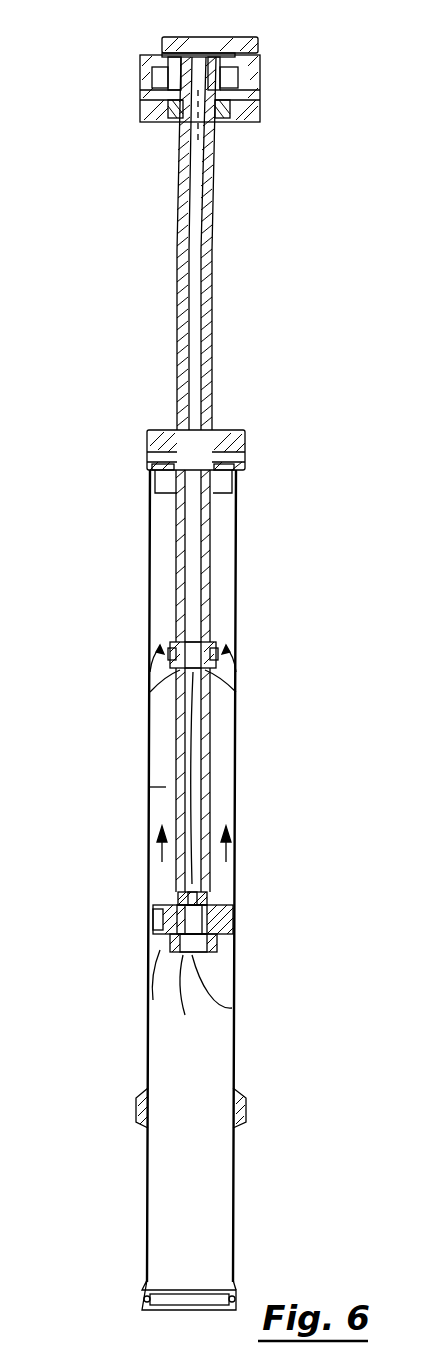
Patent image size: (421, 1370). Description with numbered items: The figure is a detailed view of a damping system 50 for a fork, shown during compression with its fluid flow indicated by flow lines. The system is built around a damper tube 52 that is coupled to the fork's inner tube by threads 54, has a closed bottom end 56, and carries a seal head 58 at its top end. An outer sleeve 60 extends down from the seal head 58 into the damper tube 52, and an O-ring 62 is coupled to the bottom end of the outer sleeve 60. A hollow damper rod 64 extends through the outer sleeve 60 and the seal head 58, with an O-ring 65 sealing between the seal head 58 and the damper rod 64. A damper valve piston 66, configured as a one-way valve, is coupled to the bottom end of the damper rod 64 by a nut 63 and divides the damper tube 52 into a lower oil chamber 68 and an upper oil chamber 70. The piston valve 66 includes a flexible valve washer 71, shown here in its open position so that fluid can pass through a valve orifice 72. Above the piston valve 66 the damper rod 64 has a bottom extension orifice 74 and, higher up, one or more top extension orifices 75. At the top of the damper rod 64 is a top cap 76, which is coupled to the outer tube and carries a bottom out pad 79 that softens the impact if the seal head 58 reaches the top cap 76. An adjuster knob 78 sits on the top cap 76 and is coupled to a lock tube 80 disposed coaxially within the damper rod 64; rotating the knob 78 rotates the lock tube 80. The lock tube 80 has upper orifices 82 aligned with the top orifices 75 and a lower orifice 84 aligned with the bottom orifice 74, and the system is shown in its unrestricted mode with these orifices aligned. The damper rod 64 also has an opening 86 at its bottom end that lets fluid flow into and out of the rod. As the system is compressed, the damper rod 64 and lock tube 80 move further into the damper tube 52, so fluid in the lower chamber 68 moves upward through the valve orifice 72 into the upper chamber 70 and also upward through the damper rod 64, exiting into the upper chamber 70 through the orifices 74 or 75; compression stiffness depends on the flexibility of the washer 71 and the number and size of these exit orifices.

The damping system 50 is at (126, 441).
The damper tube 52 is at (150, 530).
The threads 54 is at (246, 1125).
The closed bottom end 56 is at (145, 1296).
The seal head 58 is at (240, 436).
The outer sleeve 60 is at (207, 566).
The O-ring 62 is at (170, 654).
The nut 63 is at (182, 952).
The hollow damper rod 64 is at (177, 316).
The O-ring 65 is at (232, 458).
The damper valve piston 66 is at (150, 913).
The lower oil chamber 68 is at (185, 1190).
The upper oil chamber 70 is at (163, 790).
The flexible valve washer 71 is at (230, 910).
The valve orifice 72 is at (162, 937).
The bottom extension orifice 74 is at (200, 890).
The top extension orifice 75 is at (210, 670).
The top cap 76 is at (140, 82).
The adjuster knob 78 is at (236, 50).
The bottom out pad 79 is at (228, 118).
The lock tube 80 is at (213, 293).
The upper orifices 82 is at (178, 682).
The lower orifice 84 is at (225, 893).
The opening 86 is at (232, 1008).